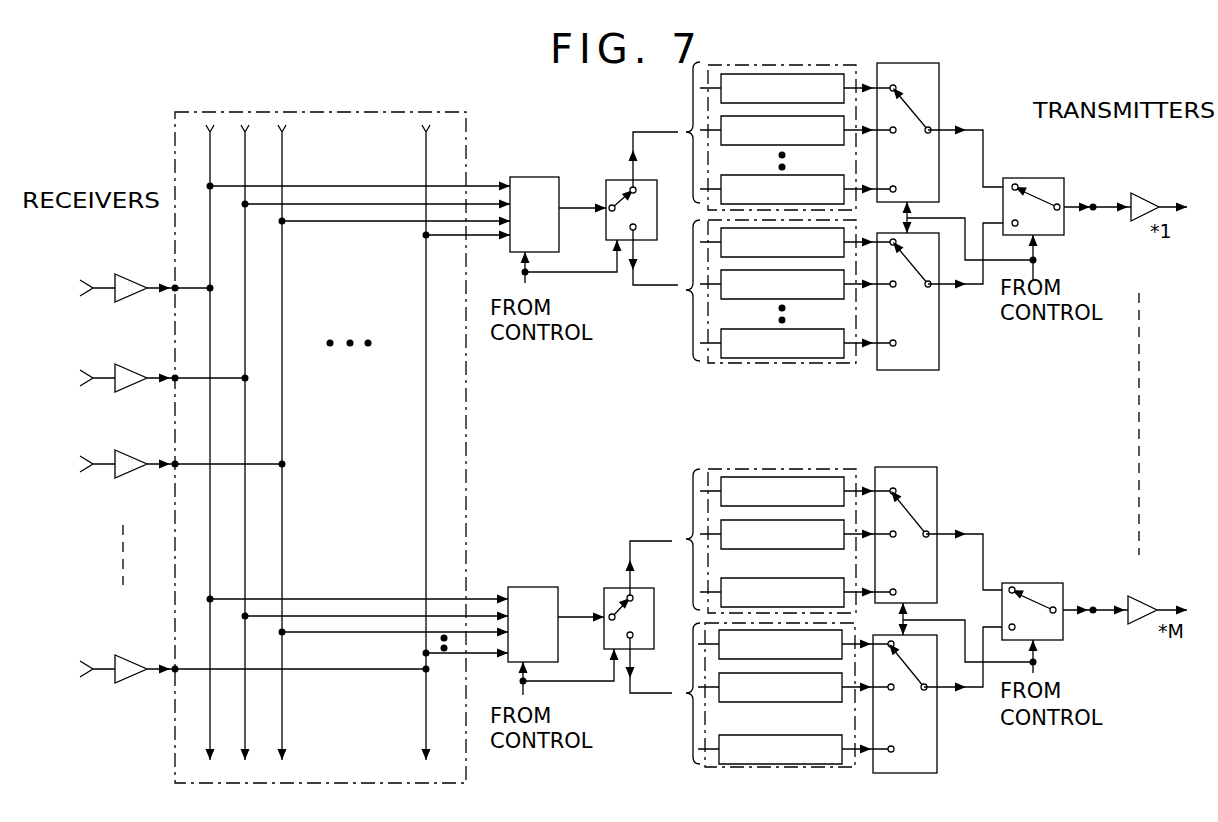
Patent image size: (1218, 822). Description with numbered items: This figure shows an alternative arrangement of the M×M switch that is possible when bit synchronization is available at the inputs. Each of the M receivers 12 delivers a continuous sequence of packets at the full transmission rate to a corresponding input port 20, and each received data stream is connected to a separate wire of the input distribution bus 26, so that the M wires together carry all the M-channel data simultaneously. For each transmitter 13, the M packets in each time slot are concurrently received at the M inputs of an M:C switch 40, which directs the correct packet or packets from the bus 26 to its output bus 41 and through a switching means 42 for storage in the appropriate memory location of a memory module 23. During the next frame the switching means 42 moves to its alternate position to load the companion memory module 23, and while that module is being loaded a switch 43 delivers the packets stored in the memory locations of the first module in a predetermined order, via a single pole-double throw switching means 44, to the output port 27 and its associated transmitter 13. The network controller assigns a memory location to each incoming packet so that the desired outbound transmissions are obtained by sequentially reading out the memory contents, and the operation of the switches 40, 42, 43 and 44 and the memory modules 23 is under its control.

The receivers 12 is at (113, 662).
The input ports 20 is at (172, 664).
The bus 26 is at (527, 108).
The M:C switch 40 is at (528, 587).
The output bus 41 is at (572, 614).
The switching means 42 is at (622, 580).
The memory module 23 is at (778, 781).
The switch 43 is at (956, 760).
The single pole-double throw switching means 44 is at (1029, 583).
The output port 27 is at (1091, 606).
The transmitter 13 is at (1150, 602).